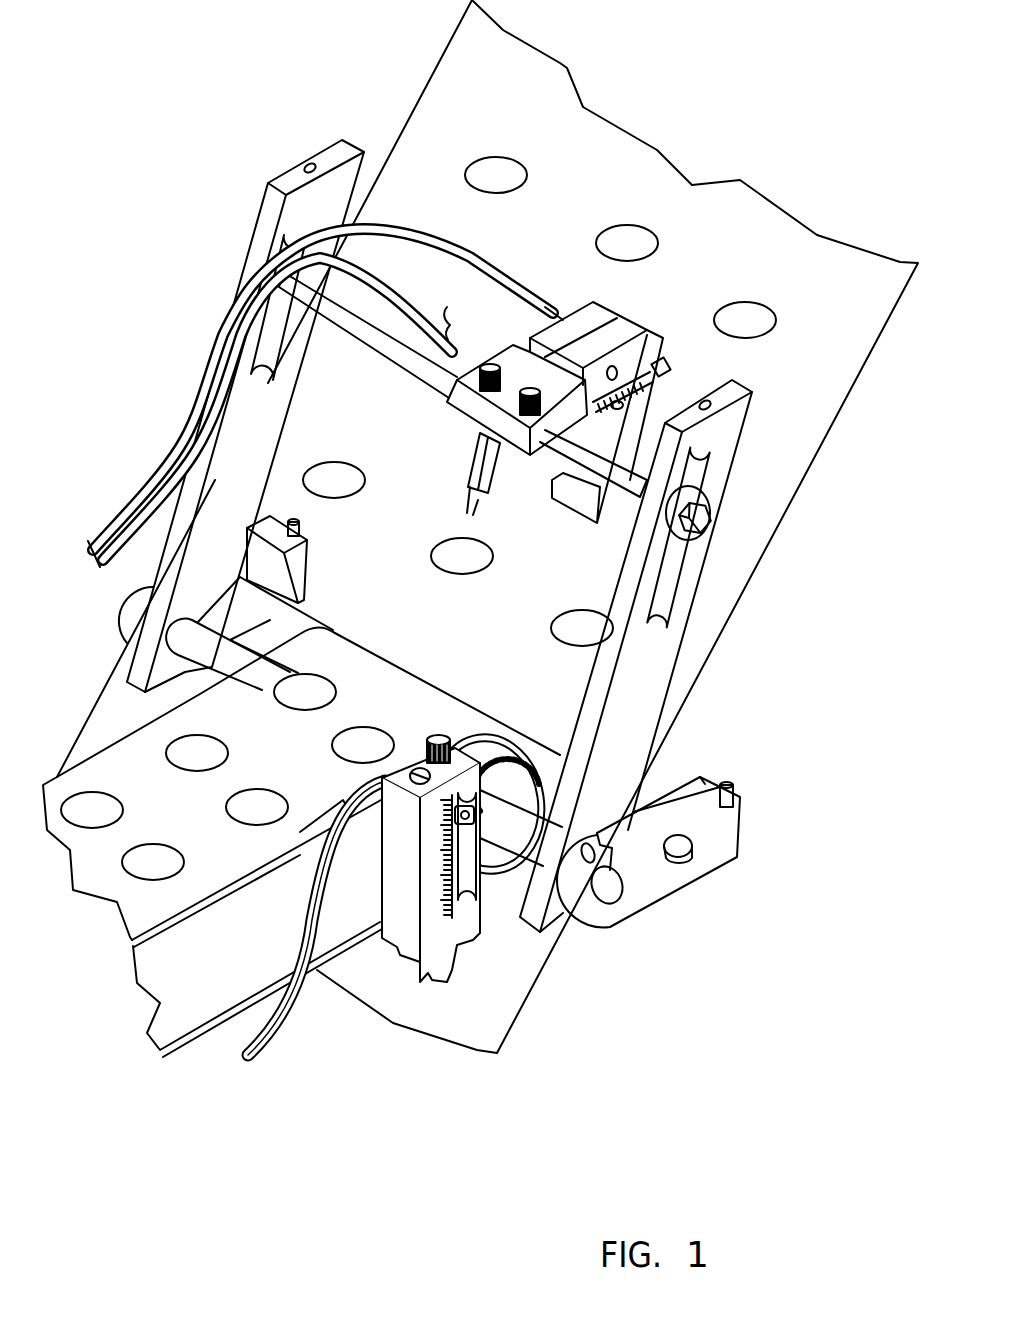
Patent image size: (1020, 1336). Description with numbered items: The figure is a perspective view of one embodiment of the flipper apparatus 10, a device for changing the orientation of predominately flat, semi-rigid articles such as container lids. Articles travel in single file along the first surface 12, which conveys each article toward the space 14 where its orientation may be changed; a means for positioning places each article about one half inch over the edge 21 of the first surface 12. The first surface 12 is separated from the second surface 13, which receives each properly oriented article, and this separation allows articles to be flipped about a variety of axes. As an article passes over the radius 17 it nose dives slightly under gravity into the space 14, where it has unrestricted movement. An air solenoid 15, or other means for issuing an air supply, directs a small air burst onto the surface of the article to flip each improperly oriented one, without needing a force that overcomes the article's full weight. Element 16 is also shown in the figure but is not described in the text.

The flipper apparatus 10 is at (778, 595).
The first surface 12 is at (196, 827).
The second surface 13 is at (376, 598).
The space 14 is at (341, 633).
The air solenoid 15 is at (485, 500).
The gauge block 16 is at (460, 697).
The radius 17 is at (545, 768).
The edge 21 is at (173, 917).